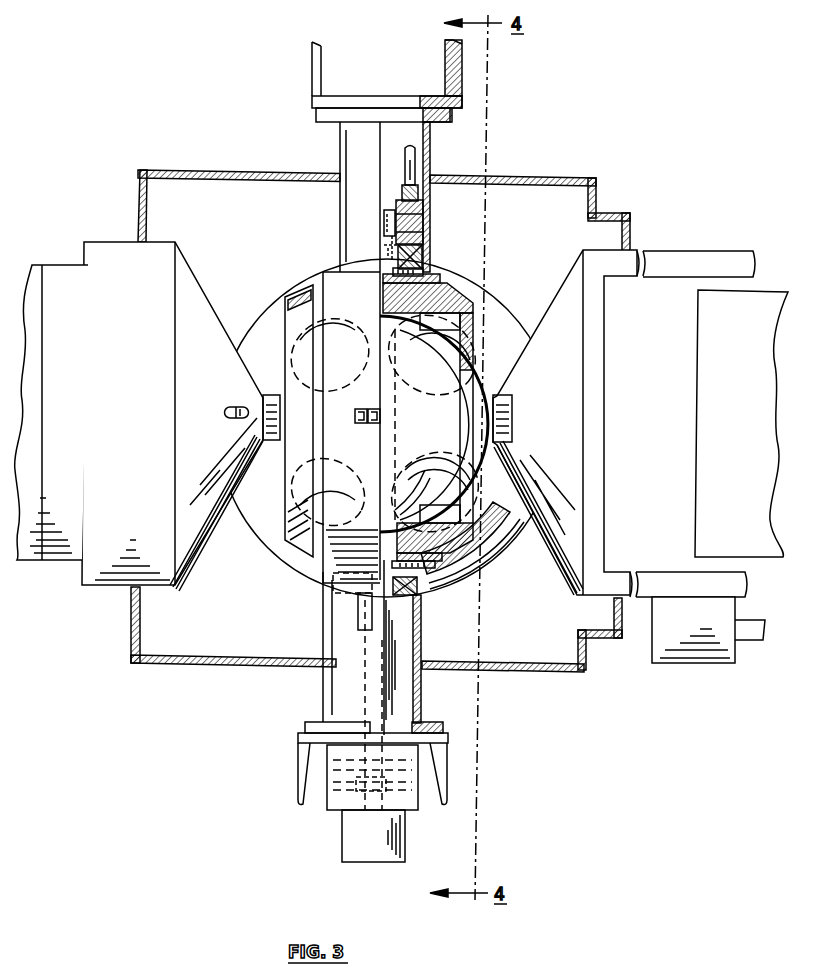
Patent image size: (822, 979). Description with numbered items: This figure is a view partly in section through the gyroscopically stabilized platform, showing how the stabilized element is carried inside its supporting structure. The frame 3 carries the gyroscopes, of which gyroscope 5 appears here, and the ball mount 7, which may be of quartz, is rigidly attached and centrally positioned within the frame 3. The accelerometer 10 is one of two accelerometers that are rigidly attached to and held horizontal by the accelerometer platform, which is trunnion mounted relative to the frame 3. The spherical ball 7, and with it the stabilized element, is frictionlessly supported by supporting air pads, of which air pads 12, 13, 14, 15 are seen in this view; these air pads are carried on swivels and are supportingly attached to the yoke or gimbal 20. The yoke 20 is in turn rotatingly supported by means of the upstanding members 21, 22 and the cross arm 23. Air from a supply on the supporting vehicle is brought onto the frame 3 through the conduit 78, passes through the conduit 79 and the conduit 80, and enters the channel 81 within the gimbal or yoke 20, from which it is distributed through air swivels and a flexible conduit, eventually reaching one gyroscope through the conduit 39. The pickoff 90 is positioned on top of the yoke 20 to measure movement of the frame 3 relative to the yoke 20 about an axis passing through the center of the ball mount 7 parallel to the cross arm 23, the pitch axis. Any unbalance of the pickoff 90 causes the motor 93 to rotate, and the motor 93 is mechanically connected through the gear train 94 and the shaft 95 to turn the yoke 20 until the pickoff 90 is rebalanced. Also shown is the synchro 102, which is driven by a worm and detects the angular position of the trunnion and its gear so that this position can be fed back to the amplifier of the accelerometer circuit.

The frame 3 is at (538, 670).
The gyroscope 5 is at (50, 278).
The ball mount 7 is at (290, 448).
The accelerometer 10 is at (716, 414).
The air pad 12 is at (386, 412).
The air pad 13 is at (433, 424).
The air pad 14 is at (348, 475).
The air pad 15 is at (330, 362).
The yoke or gimbal 20 is at (300, 322).
The upstanding member 21 is at (316, 50).
The upstanding member 22 is at (300, 752).
The cross arm 23 is at (352, 135).
The conduit 39 is at (232, 407).
The conduit 78 is at (405, 162).
The conduit 79 is at (426, 218).
The conduit 80 is at (386, 224).
The channel 81 is at (432, 263).
The pickoff 90 is at (372, 408).
The motor 93 is at (348, 843).
The gear train 94 is at (414, 792).
The shaft 95 is at (388, 698).
The synchro 102 is at (662, 637).